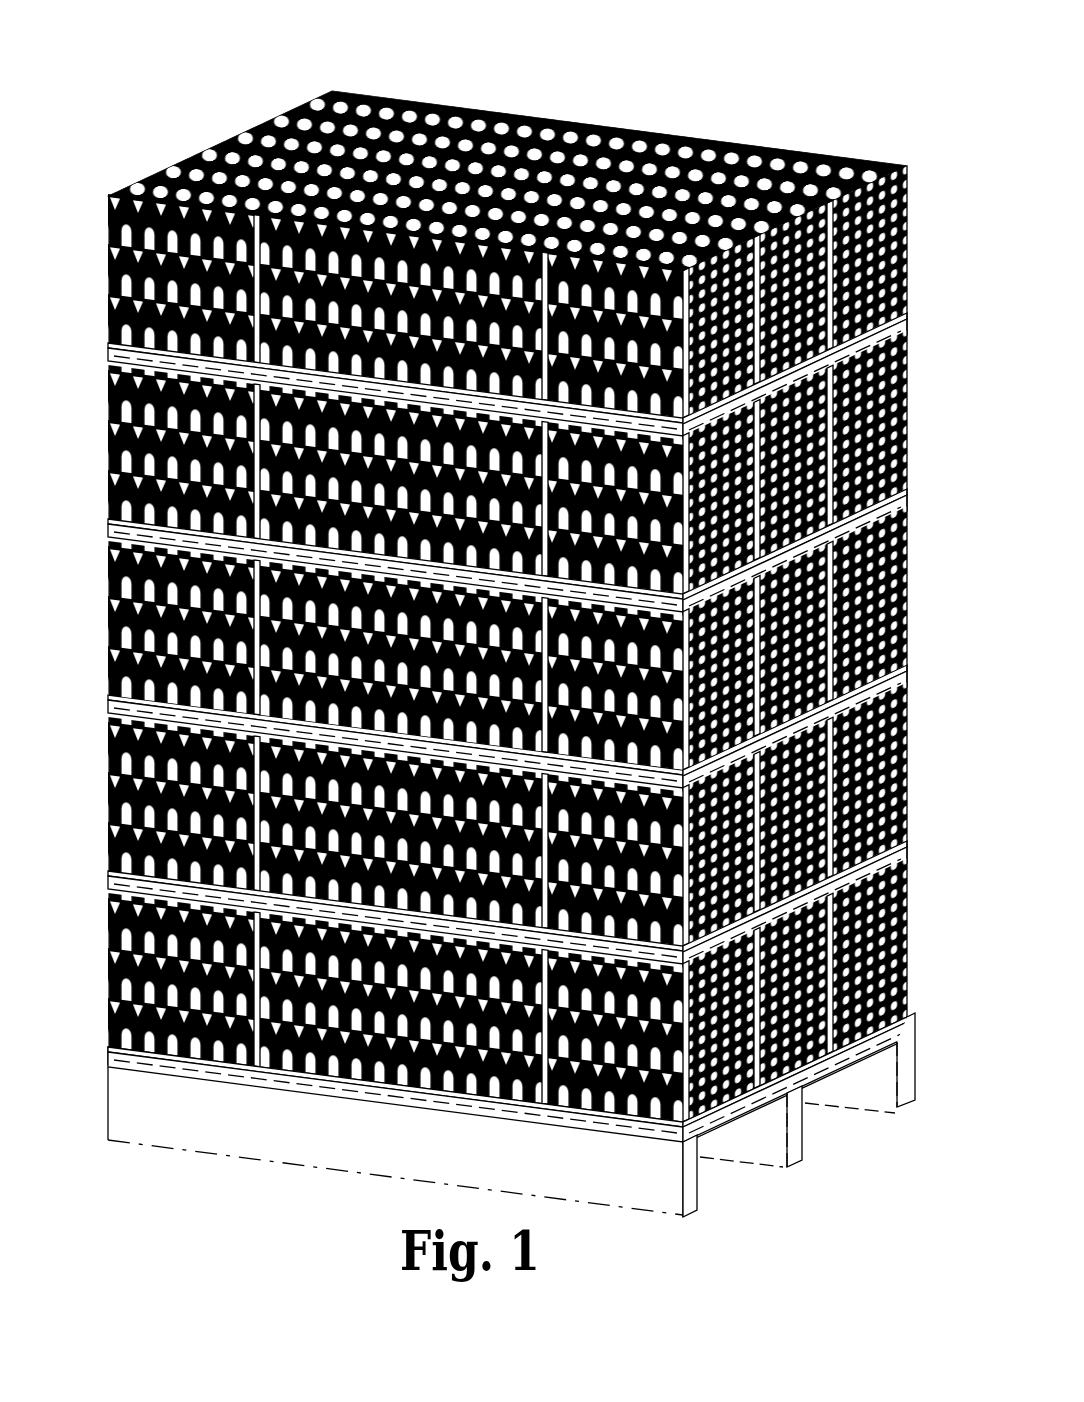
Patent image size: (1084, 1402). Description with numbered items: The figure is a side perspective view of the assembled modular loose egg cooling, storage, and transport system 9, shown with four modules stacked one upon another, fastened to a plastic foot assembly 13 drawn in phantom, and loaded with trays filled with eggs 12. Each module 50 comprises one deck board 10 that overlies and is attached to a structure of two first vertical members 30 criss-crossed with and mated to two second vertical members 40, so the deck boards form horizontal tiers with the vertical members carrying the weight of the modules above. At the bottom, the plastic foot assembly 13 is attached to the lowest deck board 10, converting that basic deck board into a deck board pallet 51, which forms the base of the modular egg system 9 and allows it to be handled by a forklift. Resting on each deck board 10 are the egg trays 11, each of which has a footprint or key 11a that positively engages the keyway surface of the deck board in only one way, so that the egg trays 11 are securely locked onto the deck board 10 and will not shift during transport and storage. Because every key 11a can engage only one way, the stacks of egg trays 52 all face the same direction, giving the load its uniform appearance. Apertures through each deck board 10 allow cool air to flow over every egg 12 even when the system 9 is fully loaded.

The modular loose egg cooling, storage, and transport system 9 is at (172, 88).
The deck board 10 is at (112, 893).
The egg tray 11 is at (903, 162).
The key 11a is at (897, 313).
The egg 12 is at (857, 167).
The plastic foot assembly 13 is at (518, 1152).
The first vertical member 30 is at (252, 529).
The second vertical member 40 is at (760, 503).
The module 50 is at (910, 660).
The deck board pallet 51 is at (913, 1012).
The stack of egg trays 52 is at (106, 197).